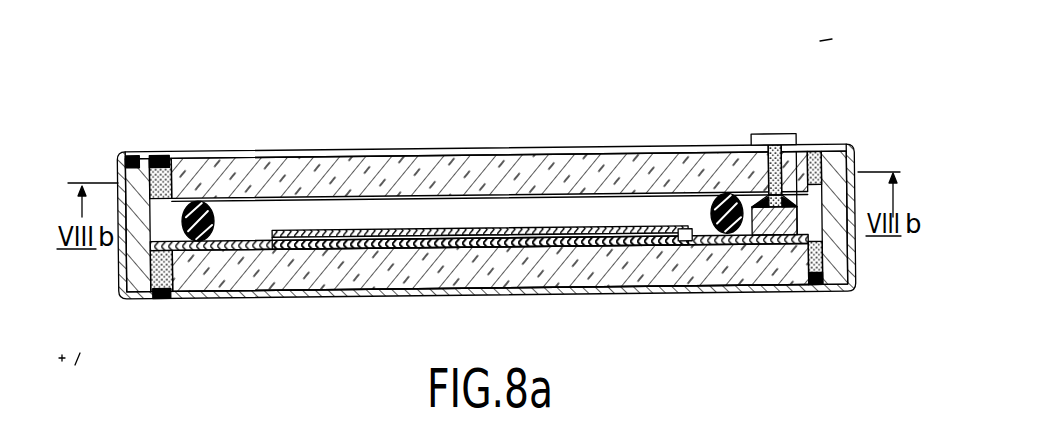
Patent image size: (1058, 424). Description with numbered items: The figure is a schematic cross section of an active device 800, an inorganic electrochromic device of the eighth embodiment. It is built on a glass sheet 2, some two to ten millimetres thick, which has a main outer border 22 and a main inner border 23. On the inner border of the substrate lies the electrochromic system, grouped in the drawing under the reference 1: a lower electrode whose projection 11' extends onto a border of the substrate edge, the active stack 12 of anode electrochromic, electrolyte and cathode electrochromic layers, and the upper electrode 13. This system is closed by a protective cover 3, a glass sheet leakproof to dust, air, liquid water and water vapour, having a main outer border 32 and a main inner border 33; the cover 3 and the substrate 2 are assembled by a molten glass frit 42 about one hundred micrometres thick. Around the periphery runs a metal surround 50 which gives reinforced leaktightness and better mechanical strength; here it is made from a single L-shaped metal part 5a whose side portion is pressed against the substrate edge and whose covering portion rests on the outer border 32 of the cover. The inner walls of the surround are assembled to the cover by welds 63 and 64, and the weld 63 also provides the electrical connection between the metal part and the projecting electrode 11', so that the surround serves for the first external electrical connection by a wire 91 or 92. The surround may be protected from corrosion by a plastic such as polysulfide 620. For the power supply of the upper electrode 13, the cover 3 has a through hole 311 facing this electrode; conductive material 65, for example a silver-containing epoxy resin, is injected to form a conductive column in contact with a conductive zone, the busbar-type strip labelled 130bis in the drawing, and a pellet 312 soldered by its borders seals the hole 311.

The active device 800 is at (498, 230).
The laminated cell stack 1 is at (482, 309).
The projecting lower electrode 11' is at (482, 289).
The active stack 12 is at (350, 247).
The upper electrode 13 is at (398, 247).
The glass sheet 2 is at (490, 294).
The main outer border 22 is at (614, 278).
The main inner border 23 is at (680, 245).
The protective cover 3 is at (485, 146).
The main outer border of the cover 32 is at (568, 152).
The main inner border of the cover 33 is at (613, 198).
The molten glass frit 42 is at (206, 200).
The surround part 5a is at (122, 162).
The metal surround 50 is at (128, 152).
The weld 63 is at (160, 294).
The weld 64 is at (158, 158).
The conductive material 65 is at (790, 240).
The polysulfide 620 is at (858, 280).
The through hole 311 is at (760, 137).
The pellet 312 is at (772, 137).
The wire 92 is at (762, 135).
The wire 91 is at (118, 268).
The connection lead 130bis is at (800, 218).